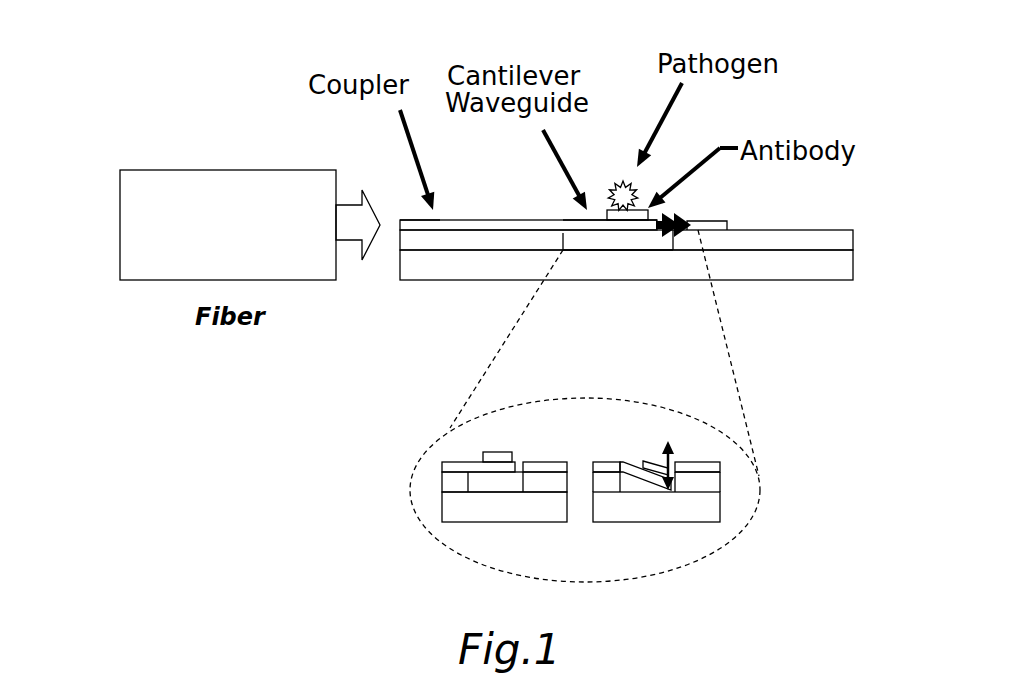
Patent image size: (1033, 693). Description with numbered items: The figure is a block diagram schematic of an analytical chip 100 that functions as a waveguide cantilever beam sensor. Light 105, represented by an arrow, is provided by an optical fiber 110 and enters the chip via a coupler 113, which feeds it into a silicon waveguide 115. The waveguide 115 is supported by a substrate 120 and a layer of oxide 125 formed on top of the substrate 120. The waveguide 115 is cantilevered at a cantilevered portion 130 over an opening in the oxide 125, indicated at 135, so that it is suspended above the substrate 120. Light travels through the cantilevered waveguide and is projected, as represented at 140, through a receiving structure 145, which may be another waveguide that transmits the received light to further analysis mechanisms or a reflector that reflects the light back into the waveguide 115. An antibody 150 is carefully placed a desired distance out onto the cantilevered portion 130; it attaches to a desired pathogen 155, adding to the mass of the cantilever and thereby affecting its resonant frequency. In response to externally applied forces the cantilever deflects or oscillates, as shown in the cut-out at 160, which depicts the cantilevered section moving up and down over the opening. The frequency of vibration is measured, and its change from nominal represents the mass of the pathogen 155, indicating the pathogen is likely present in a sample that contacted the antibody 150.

The analytical chip 100 is at (205, 97).
The light 105 is at (352, 234).
The optical fiber 110 is at (123, 197).
The coupler 113 is at (405, 218).
The silicon waveguide 115 is at (462, 228).
The substrate 120 is at (853, 266).
The layer of oxide 125 is at (853, 237).
The cantilevered portion 130 is at (583, 226).
The opening in the oxide 135 is at (615, 240).
The projected light 140 is at (678, 220).
The receiving structure 145 is at (713, 222).
The antibody 150 is at (648, 210).
The pathogen 155 is at (624, 184).
The cut-out showing deflection 160 is at (663, 448).